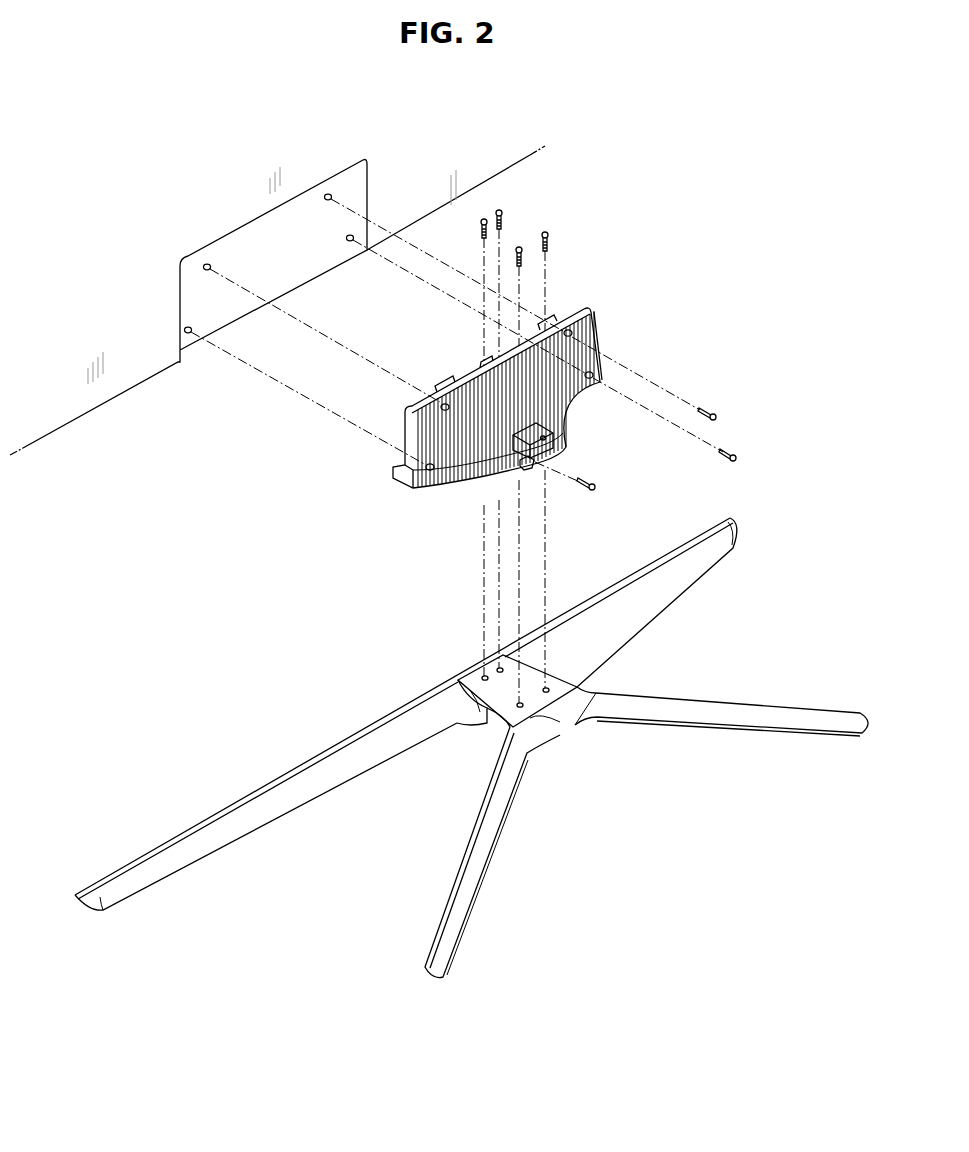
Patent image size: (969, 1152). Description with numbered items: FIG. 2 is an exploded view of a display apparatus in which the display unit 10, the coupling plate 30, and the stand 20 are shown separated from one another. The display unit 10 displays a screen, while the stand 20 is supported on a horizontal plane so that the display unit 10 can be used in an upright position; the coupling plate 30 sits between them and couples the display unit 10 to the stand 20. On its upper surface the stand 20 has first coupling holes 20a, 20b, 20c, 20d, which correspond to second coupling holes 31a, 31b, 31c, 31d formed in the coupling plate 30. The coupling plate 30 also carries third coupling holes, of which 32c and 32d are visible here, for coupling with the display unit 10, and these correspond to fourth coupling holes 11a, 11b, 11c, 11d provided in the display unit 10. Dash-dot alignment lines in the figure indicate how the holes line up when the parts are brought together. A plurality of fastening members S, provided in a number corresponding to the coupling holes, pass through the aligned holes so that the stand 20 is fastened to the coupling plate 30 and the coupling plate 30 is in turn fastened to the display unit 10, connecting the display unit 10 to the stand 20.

The display unit 10 is at (95, 417).
The fourth coupling hole 11a is at (211, 266).
The fourth coupling hole 11b is at (191, 333).
The fourth coupling hole 11c is at (331, 195).
The fourth coupling hole 11d is at (352, 241).
The fastening member S is at (547, 230).
The coupling plate 30 is at (383, 483).
The second coupling hole 31a is at (444, 383).
The second coupling hole 31b is at (432, 471).
The second coupling hole 31c is at (572, 332).
The second coupling hole 31d is at (592, 378).
The third coupling hole 32c is at (527, 470).
The third coupling hole 32d is at (556, 447).
The stand 20 is at (298, 762).
The first coupling hole 20a is at (483, 676).
The first coupling hole 20b is at (499, 666).
The first coupling hole 20c is at (522, 703).
The first coupling hole 20d is at (548, 689).